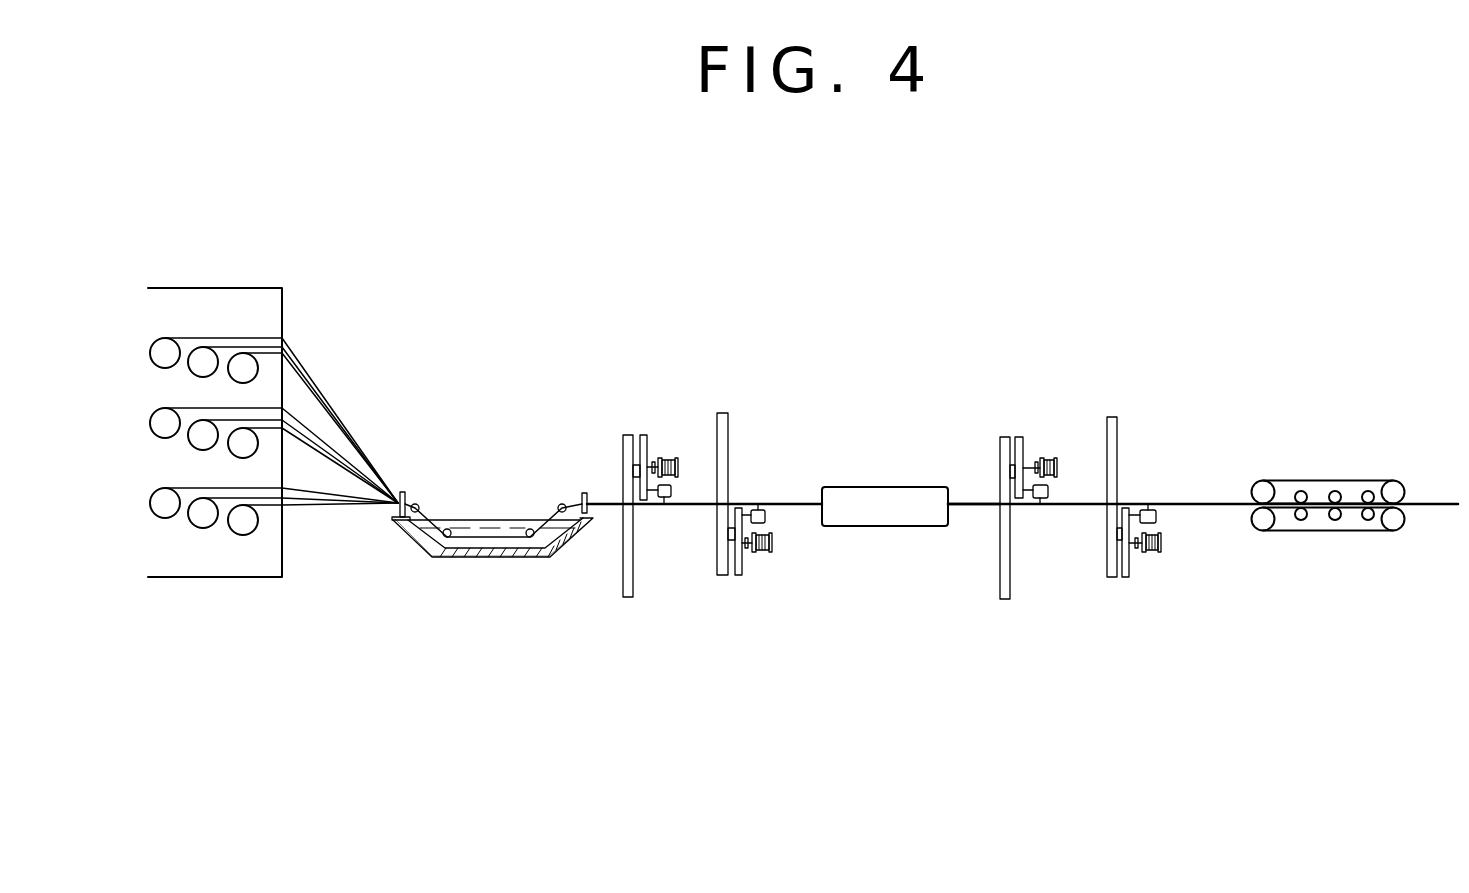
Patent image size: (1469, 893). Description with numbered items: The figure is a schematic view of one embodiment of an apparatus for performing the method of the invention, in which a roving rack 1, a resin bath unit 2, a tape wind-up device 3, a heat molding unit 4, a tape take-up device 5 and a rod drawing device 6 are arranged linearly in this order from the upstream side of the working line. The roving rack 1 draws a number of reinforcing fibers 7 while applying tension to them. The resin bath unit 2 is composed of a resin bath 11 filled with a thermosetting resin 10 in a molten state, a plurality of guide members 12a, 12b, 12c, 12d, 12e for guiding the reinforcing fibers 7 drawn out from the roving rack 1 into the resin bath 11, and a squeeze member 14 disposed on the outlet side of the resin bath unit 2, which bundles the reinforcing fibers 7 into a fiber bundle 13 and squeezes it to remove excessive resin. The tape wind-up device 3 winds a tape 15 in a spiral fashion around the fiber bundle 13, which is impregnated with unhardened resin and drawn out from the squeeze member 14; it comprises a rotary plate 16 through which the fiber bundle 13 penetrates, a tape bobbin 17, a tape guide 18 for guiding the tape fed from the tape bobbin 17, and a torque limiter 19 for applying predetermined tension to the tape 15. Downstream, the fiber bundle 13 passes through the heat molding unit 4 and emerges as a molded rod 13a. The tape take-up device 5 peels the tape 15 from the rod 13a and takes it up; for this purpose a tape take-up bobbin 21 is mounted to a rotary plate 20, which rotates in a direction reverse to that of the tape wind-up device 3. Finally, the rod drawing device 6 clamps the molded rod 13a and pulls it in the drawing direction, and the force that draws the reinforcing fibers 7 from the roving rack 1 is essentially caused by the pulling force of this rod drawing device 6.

The roving rack 1 is at (249, 588).
The resin bath unit 2 is at (473, 564).
The tape wind-up device 3 is at (675, 475).
The heat molding unit 4 is at (882, 481).
The tape take-up device 5 is at (1062, 492).
The rod drawing device 6 is at (1317, 470).
The reinforcing fibers 7 is at (303, 363).
The thermosetting resin 10 is at (503, 543).
The resin bath 11 is at (443, 560).
The guide member 12a is at (402, 491).
The guide member 12b is at (420, 505).
The guide member 12c is at (443, 537).
The guide member 12d is at (527, 528).
The guide member 12e is at (560, 503).
The fiber bundle 13 is at (607, 508).
The rod 13a is at (975, 508).
The squeeze member 14 is at (585, 492).
The tape 15 is at (670, 480).
The rotary plate 16 is at (628, 435).
The tape bobbin 17 is at (669, 458).
The tape guide 18 is at (664, 505).
The torque limiter 19 is at (644, 435).
The rotary plate 20 is at (1003, 437).
The tape take-up bobbin 21 is at (1050, 456).